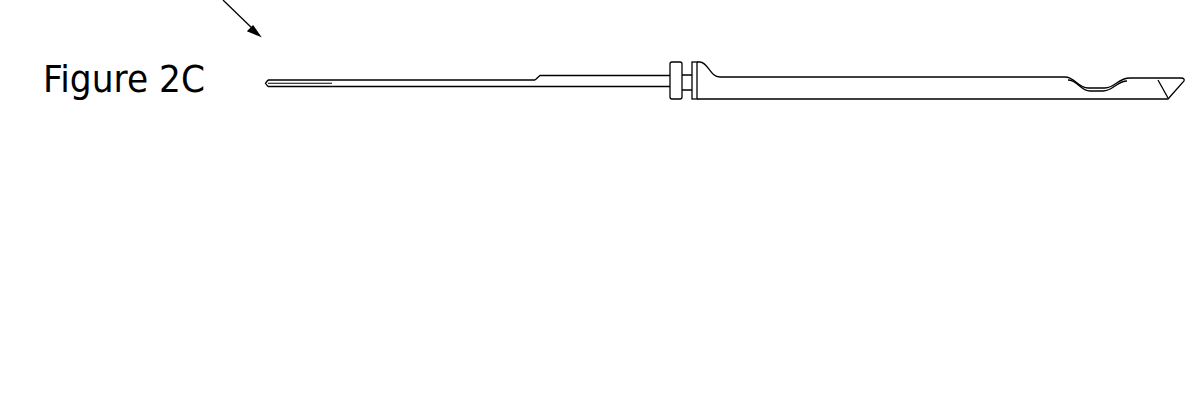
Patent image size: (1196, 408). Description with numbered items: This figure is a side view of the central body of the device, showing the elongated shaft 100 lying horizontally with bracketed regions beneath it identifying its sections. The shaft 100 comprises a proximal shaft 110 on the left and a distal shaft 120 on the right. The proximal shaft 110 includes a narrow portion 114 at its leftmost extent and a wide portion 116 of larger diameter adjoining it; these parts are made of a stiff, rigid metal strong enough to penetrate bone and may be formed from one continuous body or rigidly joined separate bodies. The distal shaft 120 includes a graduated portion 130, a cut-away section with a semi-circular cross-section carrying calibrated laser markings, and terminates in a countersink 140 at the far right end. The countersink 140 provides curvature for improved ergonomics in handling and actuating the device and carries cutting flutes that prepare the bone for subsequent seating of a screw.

The shaft 100 is at (724, 228).
The proximal shaft 110 is at (478, 182).
The narrow portion 114 is at (265, 140).
The wide portion 116 is at (613, 137).
The distal shaft 120 is at (933, 182).
The graduated portion 130 is at (685, 141).
The countersink 140 is at (1113, 147).